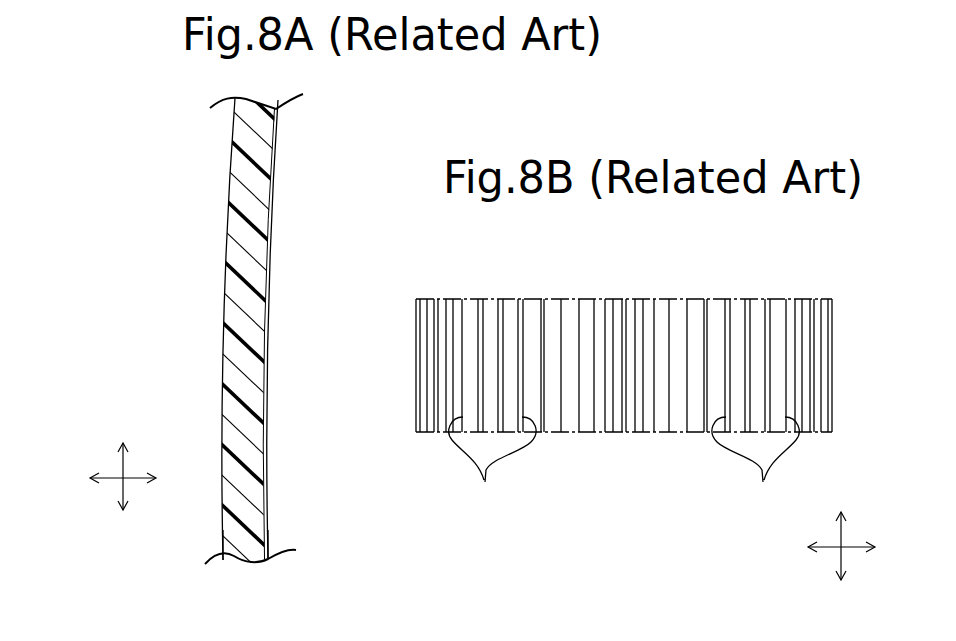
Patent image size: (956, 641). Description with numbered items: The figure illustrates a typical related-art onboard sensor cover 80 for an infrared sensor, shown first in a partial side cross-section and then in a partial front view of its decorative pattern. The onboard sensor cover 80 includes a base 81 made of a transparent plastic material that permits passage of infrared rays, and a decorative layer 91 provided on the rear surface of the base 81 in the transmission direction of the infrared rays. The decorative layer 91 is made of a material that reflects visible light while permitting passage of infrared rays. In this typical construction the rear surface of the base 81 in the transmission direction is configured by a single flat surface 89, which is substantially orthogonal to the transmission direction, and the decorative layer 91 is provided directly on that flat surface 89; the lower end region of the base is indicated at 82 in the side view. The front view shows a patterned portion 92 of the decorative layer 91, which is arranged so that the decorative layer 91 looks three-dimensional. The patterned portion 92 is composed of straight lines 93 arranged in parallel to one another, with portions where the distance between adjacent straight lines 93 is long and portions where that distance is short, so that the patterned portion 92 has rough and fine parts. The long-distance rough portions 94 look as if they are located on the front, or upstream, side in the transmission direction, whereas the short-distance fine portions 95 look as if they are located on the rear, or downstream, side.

In FIG. 8A, the onboard sensor cover 80 is at (201, 216).
In FIG. 8A, the base 81 is at (231, 282).
In FIG. 8A, the decorative layer 91 is at (276, 282).
In FIG. 8B, the decorative layer 91 is at (624, 365).
In FIG. 8A, the lower end portion 82 is at (222, 530).
In FIG. 8A, the flat surface 89 is at (272, 530).
In FIG. 8B, the patterned portion 92 is at (611, 446).
In FIG. 8B, the straight lines 93 is at (624, 469).
In FIG. 8B, the rough portions 94 is at (516, 287).
In FIG. 8B, the fine portions 95 is at (421, 288).